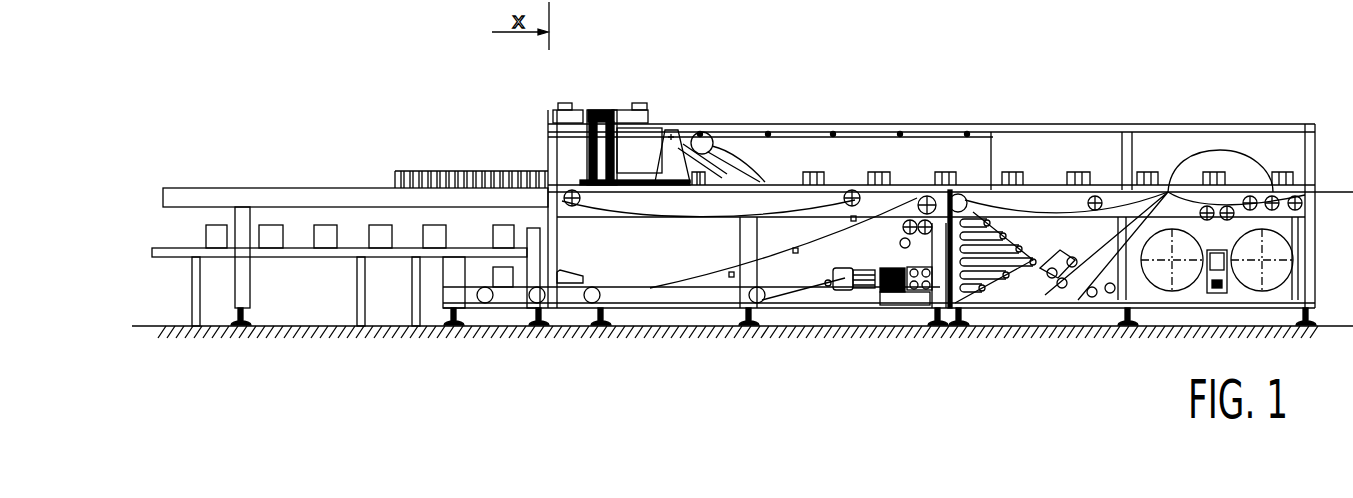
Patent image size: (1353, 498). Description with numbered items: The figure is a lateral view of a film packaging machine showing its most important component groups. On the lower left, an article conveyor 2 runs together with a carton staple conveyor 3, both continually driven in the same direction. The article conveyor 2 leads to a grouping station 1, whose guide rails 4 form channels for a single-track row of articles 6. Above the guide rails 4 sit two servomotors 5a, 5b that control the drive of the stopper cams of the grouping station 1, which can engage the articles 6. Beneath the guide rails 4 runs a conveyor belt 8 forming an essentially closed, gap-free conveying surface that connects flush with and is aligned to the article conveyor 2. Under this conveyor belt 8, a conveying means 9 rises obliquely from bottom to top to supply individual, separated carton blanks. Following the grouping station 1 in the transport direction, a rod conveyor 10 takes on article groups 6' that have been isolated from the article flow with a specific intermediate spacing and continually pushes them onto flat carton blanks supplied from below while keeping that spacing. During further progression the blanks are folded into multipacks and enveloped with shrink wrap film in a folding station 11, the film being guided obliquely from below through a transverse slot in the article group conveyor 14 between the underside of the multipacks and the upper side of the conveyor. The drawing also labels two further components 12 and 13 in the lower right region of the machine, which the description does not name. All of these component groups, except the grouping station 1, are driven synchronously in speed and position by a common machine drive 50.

The grouping station 1 is at (605, 98).
The article conveyor 2 is at (318, 195).
The carton staple conveyor 3 is at (177, 251).
The guide rails 4 is at (572, 181).
The first servomotor 5a is at (565, 113).
The second servomotor 5b is at (640, 110).
The articles 6 is at (464, 150).
The article groups 6' is at (992, 125).
The conveyor belt 8 is at (612, 212).
The conveying means 9 is at (793, 253).
The rod conveyor 10 is at (727, 182).
The folding station 11 is at (1228, 150).
The tensioning lever 12 is at (1145, 290).
The spring stack 13 is at (1054, 240).
The article group conveyor 14 is at (1110, 182).
The common machine drive 50 is at (860, 292).